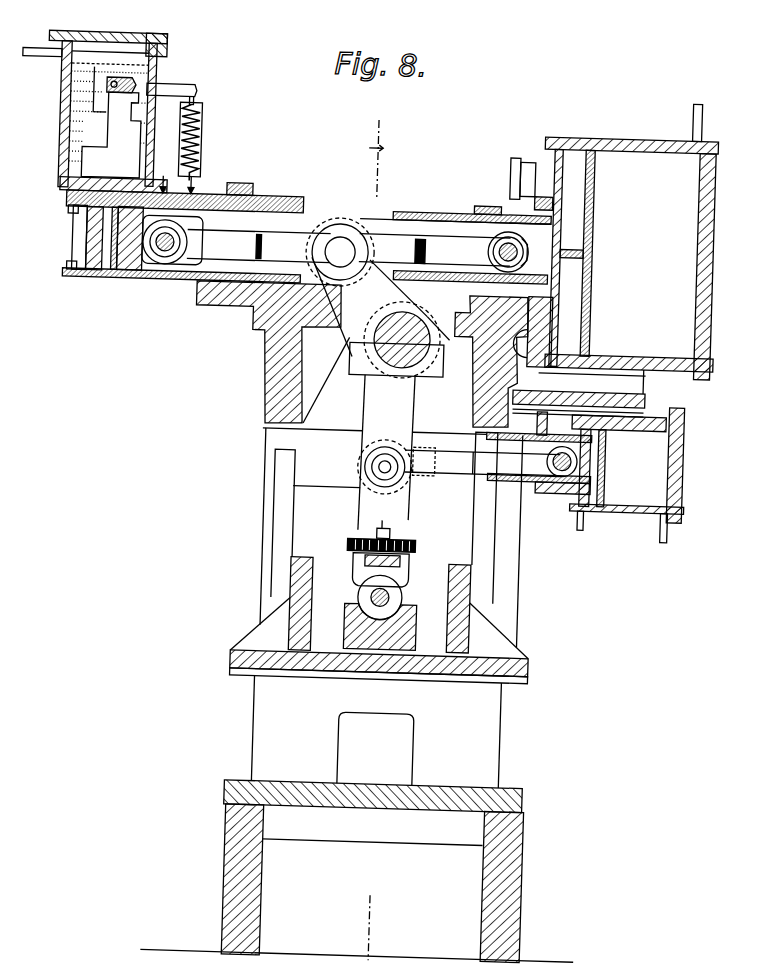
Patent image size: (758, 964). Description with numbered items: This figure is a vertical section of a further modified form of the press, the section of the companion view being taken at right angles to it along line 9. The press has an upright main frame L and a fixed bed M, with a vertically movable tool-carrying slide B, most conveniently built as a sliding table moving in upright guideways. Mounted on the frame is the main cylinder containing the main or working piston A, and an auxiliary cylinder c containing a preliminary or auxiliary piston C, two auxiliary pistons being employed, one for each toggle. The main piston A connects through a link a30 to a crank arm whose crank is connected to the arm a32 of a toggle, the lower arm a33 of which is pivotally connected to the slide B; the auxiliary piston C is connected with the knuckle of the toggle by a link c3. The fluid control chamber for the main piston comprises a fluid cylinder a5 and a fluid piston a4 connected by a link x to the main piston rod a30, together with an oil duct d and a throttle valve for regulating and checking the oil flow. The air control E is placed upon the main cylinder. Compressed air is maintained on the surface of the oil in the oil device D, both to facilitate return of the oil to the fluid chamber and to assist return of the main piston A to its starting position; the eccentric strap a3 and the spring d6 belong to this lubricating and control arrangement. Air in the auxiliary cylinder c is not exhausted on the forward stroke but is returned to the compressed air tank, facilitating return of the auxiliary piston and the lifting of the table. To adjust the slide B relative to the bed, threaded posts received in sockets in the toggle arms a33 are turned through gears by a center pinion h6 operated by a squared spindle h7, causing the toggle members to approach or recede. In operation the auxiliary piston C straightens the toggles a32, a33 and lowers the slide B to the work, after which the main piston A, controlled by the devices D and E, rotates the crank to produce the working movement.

The section line 9— 9 is at (377, 149).
The oil device D is at (152, 49).
The lubricator spring d6 is at (208, 140).
The oil duct d is at (49, 186).
The fluid cylinder a5 is at (185, 189).
The fluid piston a4 is at (181, 261).
The link x is at (335, 251).
The link (main piston rod) a30 is at (428, 240).
The air control E is at (500, 158).
The main piston A is at (585, 207).
The eccentric strap a3 is at (377, 342).
The toggle arm a32 is at (367, 402).
The link c3 is at (462, 465).
The auxiliary piston C is at (598, 456).
The auxiliary cylinder c is at (622, 528).
The lower toggle arm a33 is at (360, 505).
The center pinion h6 is at (376, 533).
The squared spindle h7 is at (381, 527).
The slide B is at (233, 667).
The main frame L is at (497, 729).
The bed M is at (529, 793).